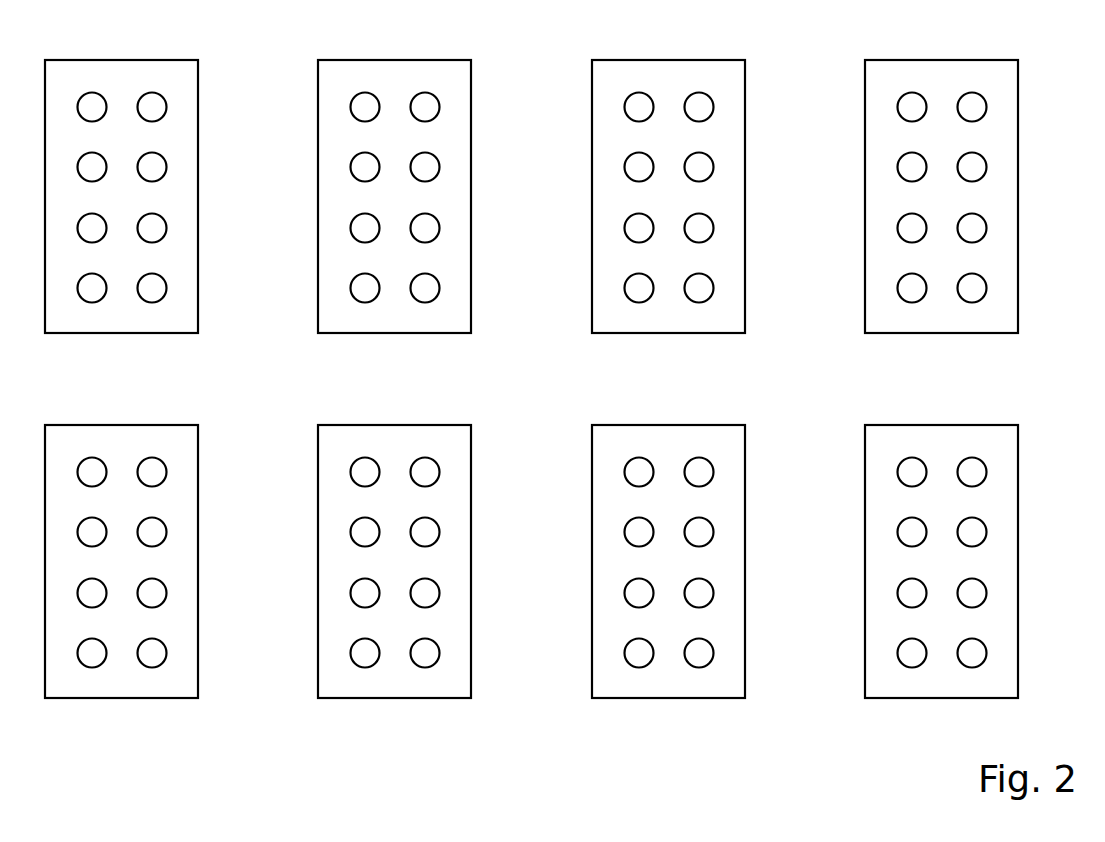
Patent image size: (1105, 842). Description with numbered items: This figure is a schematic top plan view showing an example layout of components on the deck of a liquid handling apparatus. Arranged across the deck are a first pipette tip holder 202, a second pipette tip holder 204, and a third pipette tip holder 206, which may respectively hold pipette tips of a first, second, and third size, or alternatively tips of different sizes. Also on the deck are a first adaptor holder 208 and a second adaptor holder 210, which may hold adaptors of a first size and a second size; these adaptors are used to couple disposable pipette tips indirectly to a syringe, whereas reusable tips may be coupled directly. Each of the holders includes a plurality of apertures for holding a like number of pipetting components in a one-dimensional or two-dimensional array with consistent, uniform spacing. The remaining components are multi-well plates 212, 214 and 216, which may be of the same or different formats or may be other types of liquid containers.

The first pipette tip holder 202 is at (128, 60).
The second pipette tip holder 204 is at (389, 60).
The third pipette tip holder 206 is at (650, 60).
The first adaptor holder 208 is at (112, 698).
The second adaptor holder 210 is at (373, 698).
The multi-well plate 212 is at (910, 60).
The multi-well plate 214 is at (633, 698).
The multi-well plate 216 is at (895, 698).